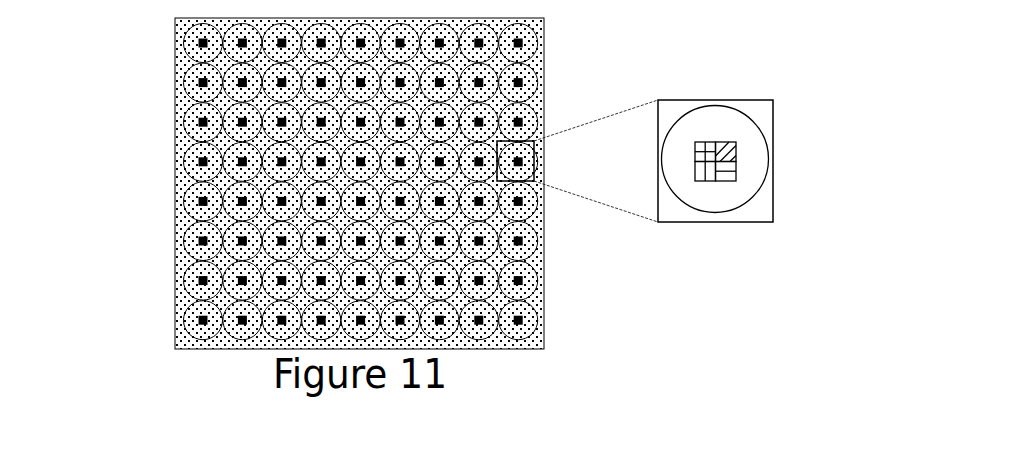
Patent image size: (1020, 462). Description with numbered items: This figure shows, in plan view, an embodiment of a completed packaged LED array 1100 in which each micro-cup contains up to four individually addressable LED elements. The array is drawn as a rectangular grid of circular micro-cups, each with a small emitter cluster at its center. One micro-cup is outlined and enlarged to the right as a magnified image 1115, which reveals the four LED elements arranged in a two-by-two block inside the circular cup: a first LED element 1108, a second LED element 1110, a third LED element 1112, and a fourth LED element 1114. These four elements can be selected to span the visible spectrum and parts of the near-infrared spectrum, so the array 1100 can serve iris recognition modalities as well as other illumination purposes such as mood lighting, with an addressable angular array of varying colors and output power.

The LED array 1100 is at (125, 97).
The magnified image 1115 is at (647, 72).
The third LED element 1112 is at (705, 148).
The first LED element 1108 is at (726, 150).
The fourth LED element 1114 is at (738, 166).
The second LED element 1110 is at (717, 182).